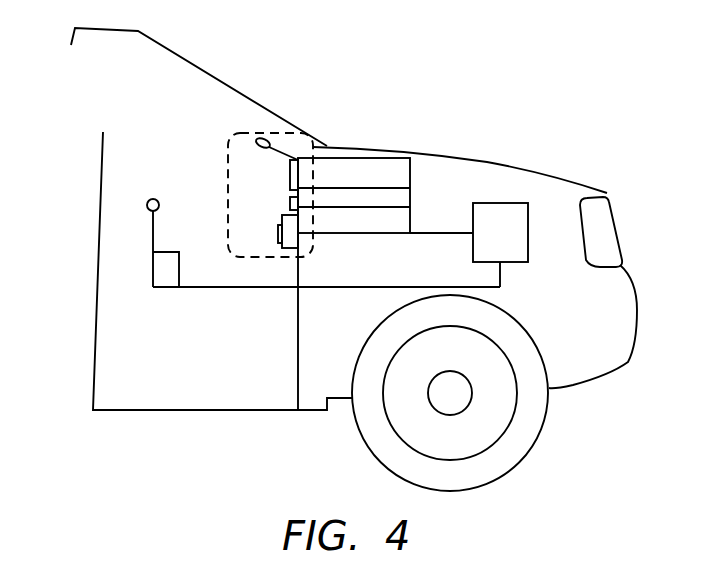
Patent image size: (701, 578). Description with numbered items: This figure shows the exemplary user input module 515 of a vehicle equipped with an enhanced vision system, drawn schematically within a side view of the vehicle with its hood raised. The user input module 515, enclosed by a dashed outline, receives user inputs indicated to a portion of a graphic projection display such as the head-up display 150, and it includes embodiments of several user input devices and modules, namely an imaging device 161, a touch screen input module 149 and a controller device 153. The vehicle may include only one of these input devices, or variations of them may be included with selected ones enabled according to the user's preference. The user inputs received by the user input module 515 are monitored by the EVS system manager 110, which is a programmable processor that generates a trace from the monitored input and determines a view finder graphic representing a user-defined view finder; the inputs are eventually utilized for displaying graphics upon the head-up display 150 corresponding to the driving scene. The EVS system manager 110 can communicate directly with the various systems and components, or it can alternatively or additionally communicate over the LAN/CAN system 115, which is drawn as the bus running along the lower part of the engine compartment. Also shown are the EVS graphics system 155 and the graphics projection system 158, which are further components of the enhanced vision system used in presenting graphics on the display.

The head-up display 150 is at (247, 88).
The controller device 153 is at (283, 138).
The user input module 515 is at (330, 147).
The touch screen input module 149 is at (290, 178).
The imaging device 161 is at (278, 245).
The EVS system manager 110 is at (513, 237).
The graphics projection system 158 is at (147, 204).
The EVS graphics system 155 is at (163, 273).
The LAN/CAN system 115 is at (202, 290).